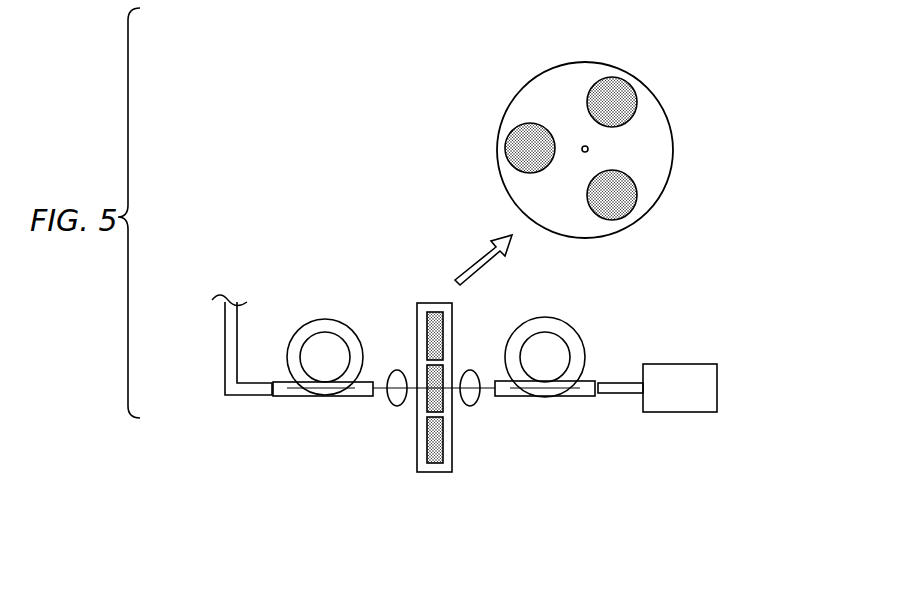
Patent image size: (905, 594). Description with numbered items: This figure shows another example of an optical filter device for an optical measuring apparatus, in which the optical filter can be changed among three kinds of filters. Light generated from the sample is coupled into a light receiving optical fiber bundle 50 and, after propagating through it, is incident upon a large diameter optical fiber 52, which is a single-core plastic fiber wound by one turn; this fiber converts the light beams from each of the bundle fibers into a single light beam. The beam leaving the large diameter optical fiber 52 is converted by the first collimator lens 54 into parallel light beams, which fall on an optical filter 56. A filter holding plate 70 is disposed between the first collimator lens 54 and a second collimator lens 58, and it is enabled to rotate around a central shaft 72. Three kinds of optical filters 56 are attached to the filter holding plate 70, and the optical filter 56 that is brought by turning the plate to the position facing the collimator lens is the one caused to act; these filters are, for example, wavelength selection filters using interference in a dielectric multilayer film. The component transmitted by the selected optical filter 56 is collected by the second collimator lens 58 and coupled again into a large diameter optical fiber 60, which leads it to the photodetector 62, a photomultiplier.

The light receiving optical fiber bundle 50 is at (228, 346).
The large diameter optical fiber 52 is at (323, 327).
The first collimator lens 54 is at (397, 404).
The optical filter 56 is at (435, 375).
The second collimator lens 58 is at (471, 403).
The large diameter optical fiber 60 is at (557, 327).
The photodetector 62 is at (673, 403).
The filter holding plate 70 is at (428, 298).
The central shaft 72 is at (589, 148).